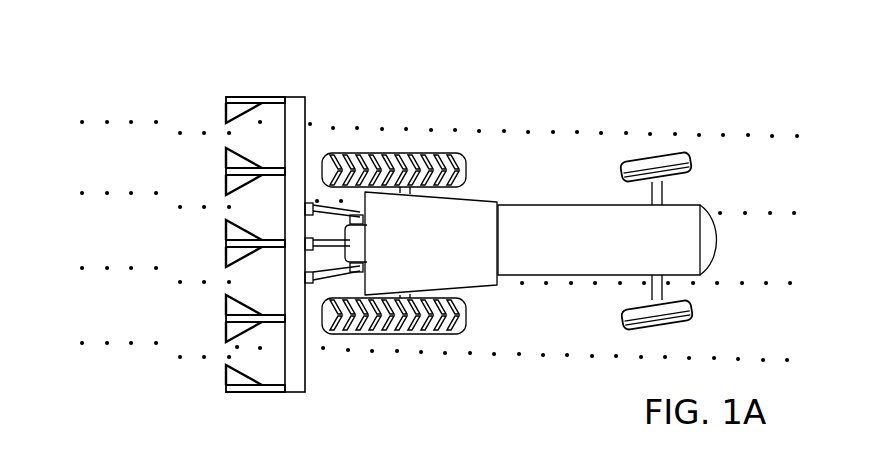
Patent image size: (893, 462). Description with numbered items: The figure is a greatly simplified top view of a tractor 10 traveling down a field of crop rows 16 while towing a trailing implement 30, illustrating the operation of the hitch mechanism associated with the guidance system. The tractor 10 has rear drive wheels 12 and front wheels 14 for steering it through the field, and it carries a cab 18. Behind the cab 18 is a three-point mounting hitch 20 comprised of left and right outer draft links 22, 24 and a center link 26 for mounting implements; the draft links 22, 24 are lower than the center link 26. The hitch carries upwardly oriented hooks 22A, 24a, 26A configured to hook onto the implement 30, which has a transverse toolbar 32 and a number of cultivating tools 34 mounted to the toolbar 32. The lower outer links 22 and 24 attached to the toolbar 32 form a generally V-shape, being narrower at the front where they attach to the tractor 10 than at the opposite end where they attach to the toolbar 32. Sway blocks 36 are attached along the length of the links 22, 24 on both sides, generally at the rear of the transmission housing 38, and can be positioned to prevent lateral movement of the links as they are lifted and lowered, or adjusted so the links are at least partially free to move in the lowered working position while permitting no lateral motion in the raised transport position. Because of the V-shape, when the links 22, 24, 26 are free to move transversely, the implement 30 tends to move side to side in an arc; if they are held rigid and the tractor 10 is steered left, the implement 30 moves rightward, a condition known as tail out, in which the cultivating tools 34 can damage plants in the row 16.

The tractor 10 is at (541, 220).
The rear drive wheels 12 is at (437, 153).
The front wheels 14 is at (688, 179).
The rows 16 is at (76, 121).
The cab 18 is at (442, 252).
The 3-point mounting hitch 20 is at (252, 247).
The left outer draft link 22 is at (357, 211).
The upwardly oriented hook 22A is at (306, 209).
The right outer draft link 24 is at (353, 270).
The upwardly oriented hook 24a is at (307, 284).
The center link 26 is at (330, 286).
The center link pivot 26A is at (306, 243).
The implement 30 is at (297, 246).
The toolbar 32 is at (295, 372).
The cultivating tools 34 is at (226, 101).
The sway blocks 36 is at (364, 221).
The transmission housing 38 is at (368, 240).